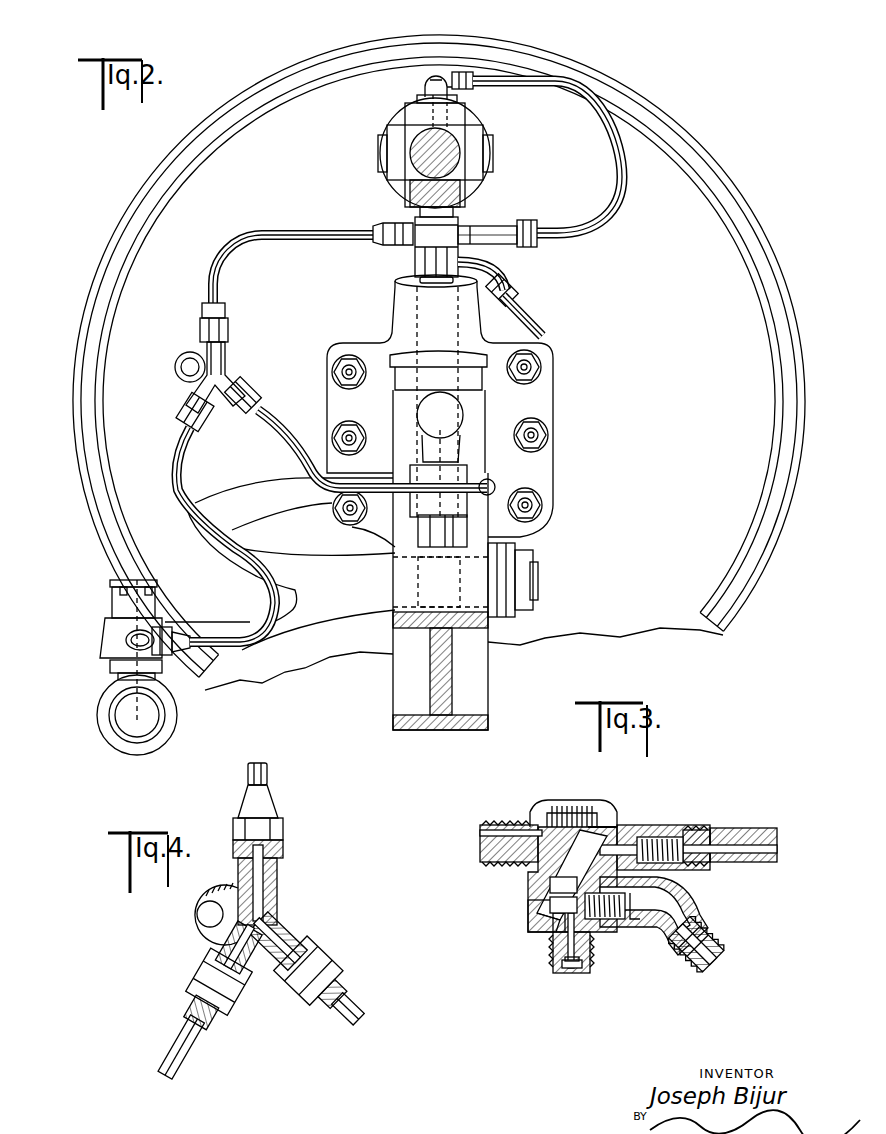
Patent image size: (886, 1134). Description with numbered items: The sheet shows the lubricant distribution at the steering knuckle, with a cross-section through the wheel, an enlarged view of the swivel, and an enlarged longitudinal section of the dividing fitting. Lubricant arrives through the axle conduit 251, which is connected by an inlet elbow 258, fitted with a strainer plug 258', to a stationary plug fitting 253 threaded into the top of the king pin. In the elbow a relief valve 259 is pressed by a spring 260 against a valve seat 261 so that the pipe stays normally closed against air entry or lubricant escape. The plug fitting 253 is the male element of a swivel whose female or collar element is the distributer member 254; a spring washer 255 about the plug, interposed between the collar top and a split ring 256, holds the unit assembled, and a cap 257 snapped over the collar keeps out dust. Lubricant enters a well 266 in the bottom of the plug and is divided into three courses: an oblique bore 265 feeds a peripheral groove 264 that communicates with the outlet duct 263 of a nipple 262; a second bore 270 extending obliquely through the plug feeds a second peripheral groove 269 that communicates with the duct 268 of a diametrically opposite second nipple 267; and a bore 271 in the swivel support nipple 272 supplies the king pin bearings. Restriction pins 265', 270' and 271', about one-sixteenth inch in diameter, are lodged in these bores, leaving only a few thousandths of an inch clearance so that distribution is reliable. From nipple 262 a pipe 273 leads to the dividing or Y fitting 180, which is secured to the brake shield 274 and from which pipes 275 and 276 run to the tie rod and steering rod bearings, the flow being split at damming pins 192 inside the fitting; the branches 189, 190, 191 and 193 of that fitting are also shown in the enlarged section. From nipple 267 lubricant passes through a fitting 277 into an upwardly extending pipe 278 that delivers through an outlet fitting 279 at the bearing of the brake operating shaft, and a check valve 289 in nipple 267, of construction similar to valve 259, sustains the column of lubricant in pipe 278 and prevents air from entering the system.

In FIG. 2, the outlet fitting 279 is at (439, 82).
In FIG. 2, the pipe 278 is at (597, 136).
In FIG. 2, the fitting 277 is at (519, 248).
In FIG. 3, the fitting 277 is at (745, 832).
In FIG. 2, the second nipple 267 is at (480, 228).
In FIG. 3, the second nipple 267 is at (690, 830).
In FIG. 2, the nipple 262 is at (386, 230).
In FIG. 3, the nipple 262 is at (480, 850).
In FIG. 2, the distributer member 254 is at (427, 240).
In FIG. 3, the distributer member 254 is at (531, 870).
In FIG. 2, the pipe 273 is at (256, 236).
In FIG. 4, the pipe 273 is at (268, 772).
In FIG. 2, the inlet elbow 258 is at (513, 284).
In FIG. 3, the inlet elbow 258 is at (689, 953).
In FIG. 2, the axle conduit 251 is at (532, 322).
In FIG. 2, the dividing fitting 180 is at (223, 352).
In FIG. 4, the dividing fitting 180 is at (278, 872).
In FIG. 2, the brake shield 274 is at (181, 413).
In FIG. 2, the pipe 276 is at (288, 440).
In FIG. 4, the pipe 276 is at (178, 1047).
In FIG. 2, the pipe 275 is at (178, 492).
In FIG. 4, the pipe 275 is at (343, 1017).
In FIG. 3, the cap 257 is at (540, 808).
In FIG. 3, the split ring 256 is at (556, 800).
In FIG. 3, the spring washer 255 is at (530, 820).
In FIG. 3, the outlet duct 263 is at (480, 833).
In FIG. 3, the peripheral groove 264 is at (630, 830).
In FIG. 3, the check valve 289 is at (660, 838).
In FIG. 3, the second peripheral groove 269 is at (600, 810).
In FIG. 3, the bore 270 is at (572, 844).
In FIG. 3, the oblique bore 265 is at (523, 890).
In FIG. 3, the restriction pin 265' is at (521, 909).
In FIG. 3, the plug fitting 253 is at (530, 925).
In FIG. 3, the restriction pin 270' is at (520, 940).
In FIG. 3, the well 266 is at (553, 942).
In FIG. 3, the restriction pin 271' is at (529, 984).
In FIG. 3, the bore 271 is at (554, 963).
In FIG. 3, the swivel support nipple 272 is at (581, 974).
In FIG. 3, the spring 260 is at (612, 922).
In FIG. 3, the relief valve 259 is at (638, 940).
In FIG. 3, the duct 268 is at (692, 880).
In FIG. 3, the valve seat 261 is at (692, 905).
In FIG. 3, the strainer plug 258' is at (716, 944).
In FIG. 4, the branch arm 189 is at (293, 920).
In FIG. 4, the mounting ear 190 is at (230, 952).
In FIG. 4, the coupling nut 191 is at (240, 977).
In FIG. 4, the damming pins 192 is at (227, 978).
In FIG. 4, the ferrule 193 is at (208, 1027).